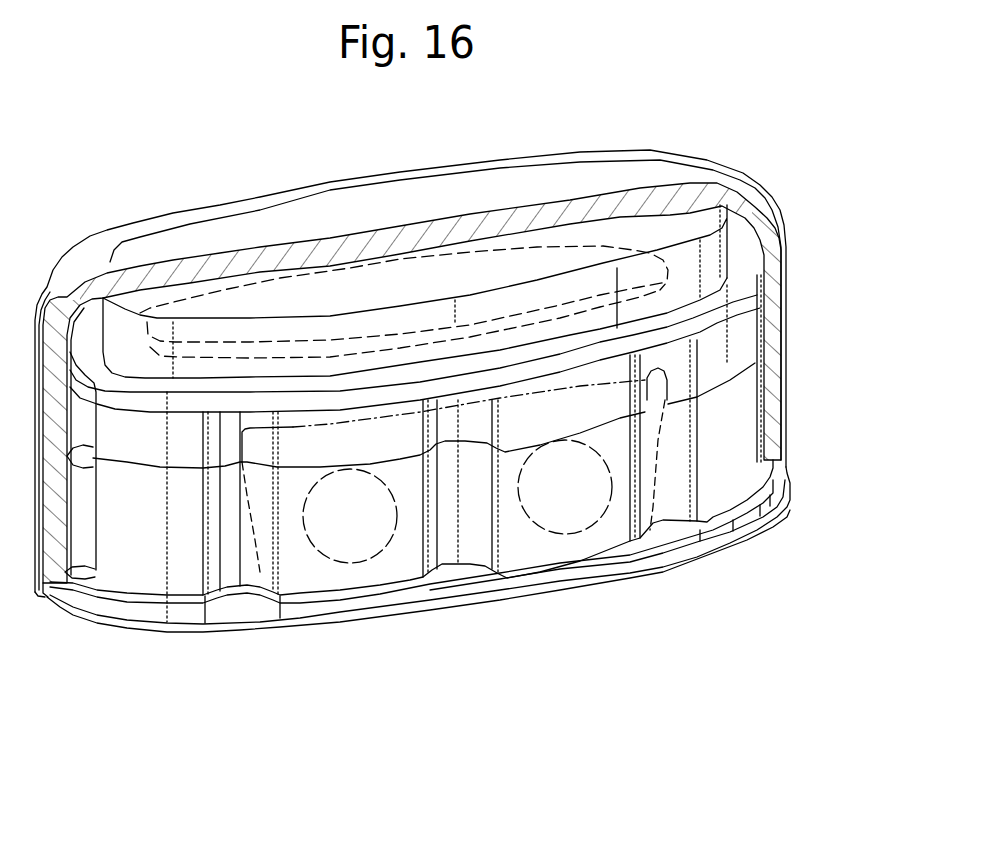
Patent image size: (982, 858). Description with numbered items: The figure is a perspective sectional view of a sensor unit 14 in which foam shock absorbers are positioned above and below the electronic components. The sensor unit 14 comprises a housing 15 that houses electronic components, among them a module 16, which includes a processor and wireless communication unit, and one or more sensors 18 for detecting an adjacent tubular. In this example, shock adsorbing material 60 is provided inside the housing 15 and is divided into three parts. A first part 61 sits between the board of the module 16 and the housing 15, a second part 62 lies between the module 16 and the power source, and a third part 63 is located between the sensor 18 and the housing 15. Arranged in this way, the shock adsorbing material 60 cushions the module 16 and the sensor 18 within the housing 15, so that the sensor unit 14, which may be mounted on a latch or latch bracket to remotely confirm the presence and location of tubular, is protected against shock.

The sensor unit 14 is at (410, 349).
The housing 15 is at (443, 347).
The module 16 is at (415, 222).
The sensor 18 is at (418, 594).
The shock adsorbing material 60 is at (472, 311).
The first part 61 is at (405, 327).
The second part 62 is at (477, 380).
The third part 63 is at (467, 435).